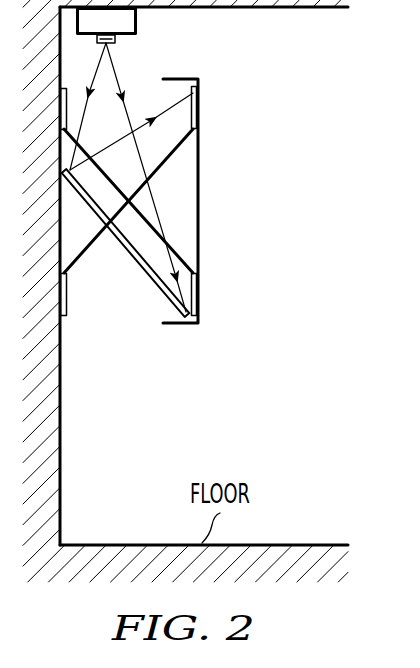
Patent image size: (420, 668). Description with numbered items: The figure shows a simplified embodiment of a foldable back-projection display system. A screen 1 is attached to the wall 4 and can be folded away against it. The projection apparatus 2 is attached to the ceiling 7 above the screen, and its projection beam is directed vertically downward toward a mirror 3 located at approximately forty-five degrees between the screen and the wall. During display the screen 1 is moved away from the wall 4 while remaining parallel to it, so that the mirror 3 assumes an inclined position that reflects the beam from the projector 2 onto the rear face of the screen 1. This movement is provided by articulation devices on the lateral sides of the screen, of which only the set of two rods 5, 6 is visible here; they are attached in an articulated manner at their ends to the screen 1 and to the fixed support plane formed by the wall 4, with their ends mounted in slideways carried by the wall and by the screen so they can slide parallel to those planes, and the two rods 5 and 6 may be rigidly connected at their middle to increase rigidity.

The screen 1 is at (200, 200).
The projection apparatus 2 is at (137, 33).
The mirror 3 is at (151, 278).
The wall 4 is at (62, 385).
The rod 5 is at (87, 252).
The rod 6 is at (147, 218).
The ceiling 7 is at (242, 8).